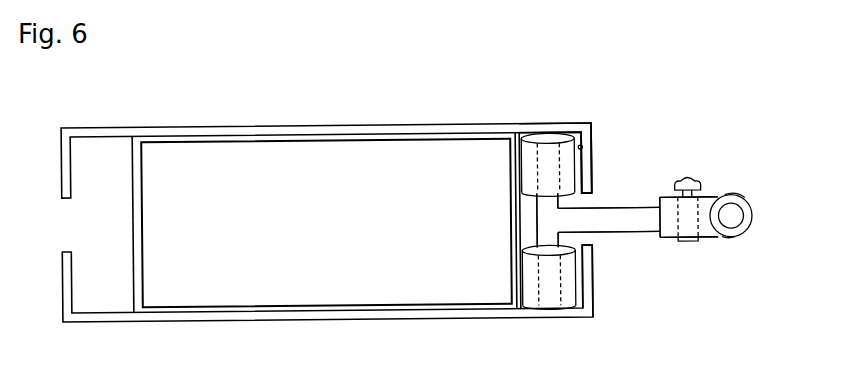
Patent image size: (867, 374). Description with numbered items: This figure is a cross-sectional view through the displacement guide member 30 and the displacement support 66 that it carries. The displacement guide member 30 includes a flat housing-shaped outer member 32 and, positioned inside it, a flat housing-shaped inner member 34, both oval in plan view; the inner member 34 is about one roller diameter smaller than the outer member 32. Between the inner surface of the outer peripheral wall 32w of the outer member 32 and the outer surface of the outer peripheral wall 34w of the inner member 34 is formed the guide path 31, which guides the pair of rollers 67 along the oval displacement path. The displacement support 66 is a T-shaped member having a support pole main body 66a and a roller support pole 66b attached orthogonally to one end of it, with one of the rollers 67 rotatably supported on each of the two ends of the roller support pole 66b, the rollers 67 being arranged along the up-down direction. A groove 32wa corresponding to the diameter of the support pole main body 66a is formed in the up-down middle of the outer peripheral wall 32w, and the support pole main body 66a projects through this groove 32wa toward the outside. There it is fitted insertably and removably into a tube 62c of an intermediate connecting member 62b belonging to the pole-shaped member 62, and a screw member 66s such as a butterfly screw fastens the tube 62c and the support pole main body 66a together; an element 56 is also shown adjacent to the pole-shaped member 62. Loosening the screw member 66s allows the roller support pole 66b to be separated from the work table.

The displacement guide member 30 is at (464, 125).
The guide path 31 is at (583, 147).
The outer member 32 is at (542, 122).
The outer peripheral wall 32w is at (592, 122).
The groove 32wa is at (597, 233).
The inner member 34 is at (335, 134).
The outer peripheral wall 34w is at (526, 296).
The shaft 56 is at (739, 192).
The pole-shaped member 62 is at (746, 208).
The intermediate connecting member 62b is at (726, 243).
The tube 62c is at (702, 243).
The displacement support 66 is at (645, 207).
The support pole main body 66a is at (600, 207).
The roller support pole 66b is at (537, 203).
The screw member 66s is at (695, 182).
The rollers 67 is at (527, 162).